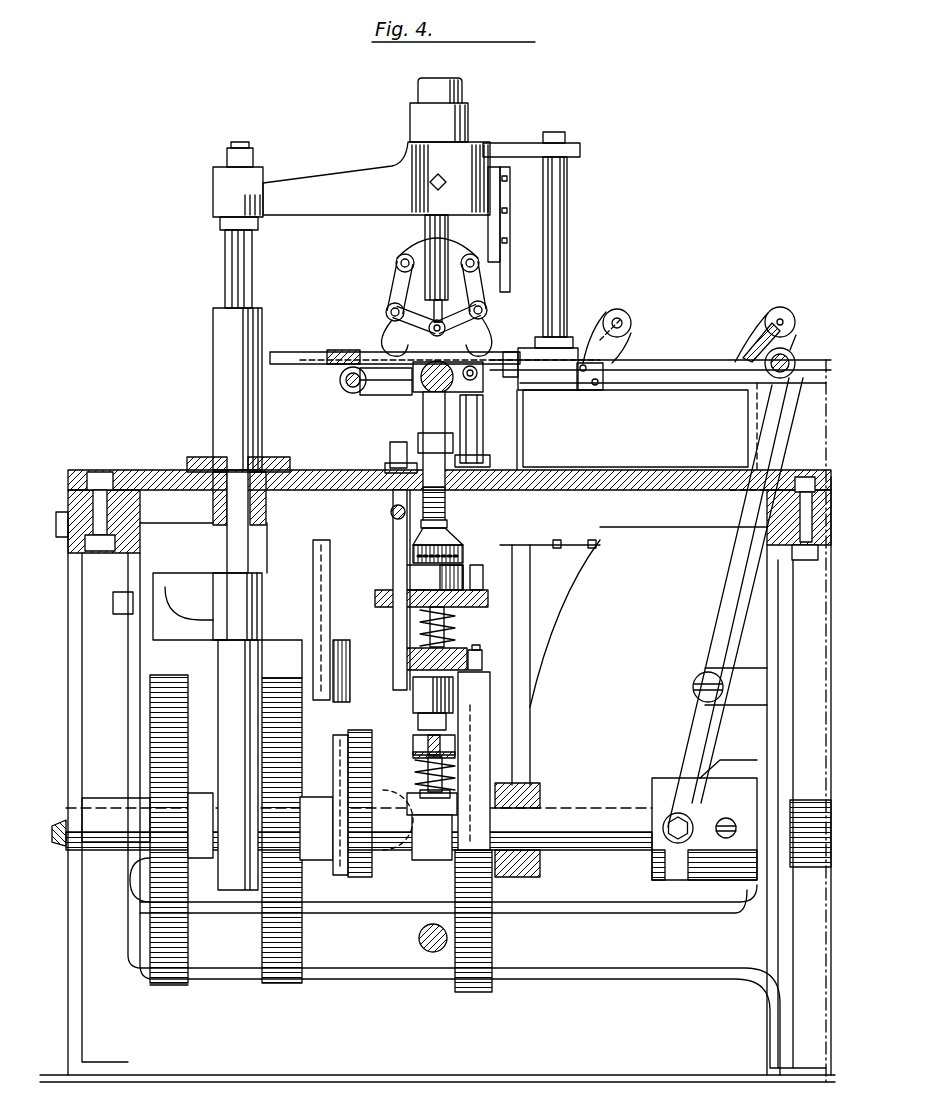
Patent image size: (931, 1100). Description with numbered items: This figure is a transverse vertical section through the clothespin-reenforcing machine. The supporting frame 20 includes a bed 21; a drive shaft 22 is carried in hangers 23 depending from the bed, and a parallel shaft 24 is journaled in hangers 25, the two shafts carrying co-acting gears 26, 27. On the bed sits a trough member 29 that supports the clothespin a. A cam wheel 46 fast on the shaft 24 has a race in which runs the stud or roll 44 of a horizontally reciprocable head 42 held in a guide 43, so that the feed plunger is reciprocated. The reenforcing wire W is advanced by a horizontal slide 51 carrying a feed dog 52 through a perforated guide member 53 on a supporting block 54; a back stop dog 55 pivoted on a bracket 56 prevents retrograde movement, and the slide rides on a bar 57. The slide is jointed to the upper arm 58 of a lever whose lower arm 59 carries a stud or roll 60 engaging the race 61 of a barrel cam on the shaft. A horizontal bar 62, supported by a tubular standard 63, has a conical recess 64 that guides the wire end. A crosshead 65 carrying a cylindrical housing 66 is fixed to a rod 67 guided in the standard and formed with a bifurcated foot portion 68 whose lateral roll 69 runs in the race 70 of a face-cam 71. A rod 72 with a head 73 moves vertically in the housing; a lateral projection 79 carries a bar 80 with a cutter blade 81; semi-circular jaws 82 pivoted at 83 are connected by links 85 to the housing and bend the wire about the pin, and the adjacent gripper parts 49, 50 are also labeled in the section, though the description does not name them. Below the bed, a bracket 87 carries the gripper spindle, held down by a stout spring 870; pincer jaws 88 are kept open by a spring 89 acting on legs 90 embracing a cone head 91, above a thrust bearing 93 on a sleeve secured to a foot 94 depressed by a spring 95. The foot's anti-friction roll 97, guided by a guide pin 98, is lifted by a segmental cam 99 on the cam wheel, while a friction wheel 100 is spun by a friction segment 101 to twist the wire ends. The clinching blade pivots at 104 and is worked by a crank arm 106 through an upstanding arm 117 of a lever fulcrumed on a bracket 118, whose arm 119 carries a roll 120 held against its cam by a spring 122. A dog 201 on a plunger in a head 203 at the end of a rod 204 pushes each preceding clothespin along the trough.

The supporting frame 20 is at (722, 970).
The bed 21 is at (170, 468).
The drive shaft 22 is at (60, 848).
The hangers 23 is at (310, 590).
The shaft 24 is at (597, 842).
The hangers 25 is at (146, 556).
The gear 26 is at (140, 885).
The gear 27 is at (148, 955).
The trough member 29 is at (386, 458).
The horizontally reciprocable head 42 is at (540, 867).
The guide 43 is at (530, 878).
The stud or roll 44 is at (505, 820).
The cam wheel 46 is at (492, 687).
The gripper arm 49 is at (403, 330).
The gripper arm 50 is at (440, 352).
The horizontal slide 51 is at (735, 360).
The feed dog 52 is at (760, 318).
The guide member 53 is at (510, 352).
The supporting block 54 is at (635, 428).
The back stop dog 55 is at (586, 345).
The bracket 56 is at (632, 333).
The bar 57 is at (712, 383).
The upper arm 58 is at (723, 565).
The lower arm 59 is at (703, 732).
The stud or roll 60 is at (665, 845).
The cam race 61 is at (690, 880).
The bar 62 is at (276, 351).
The tubular standard 63 is at (213, 350).
The conical recess 64 is at (363, 352).
The crosshead 65 is at (402, 158).
The cylindrical housing 66 is at (462, 112).
The rod 67 is at (225, 243).
The bifurcated foot portion 68 is at (232, 892).
The lateral roll 69 is at (274, 688).
The cam race 70 is at (250, 715).
The face-cam 71 is at (280, 980).
The rod 72 is at (426, 292).
The head 73 is at (420, 90).
The lateral projection 79 is at (478, 178).
The bar 80 is at (512, 187).
The cutter blade 81 is at (512, 223).
The jaws 82 is at (392, 333).
The pivot 83 is at (425, 238).
The links 85 is at (398, 268).
The bracket 87 is at (490, 598).
The jaws 88 is at (425, 420).
The spring 89 is at (446, 498).
The legs 90 is at (448, 523).
The cone head 91 is at (485, 535).
The thrust bearing 93 is at (464, 556).
The foot 94 is at (458, 636).
The spring 95 is at (428, 620).
The anti-friction roll 97 is at (484, 660).
The guide pin 98 is at (484, 570).
The segmental cam 99 is at (480, 993).
The friction wheel 100 is at (415, 692).
The friction segment 101 is at (452, 882).
The pivot pin 104 is at (483, 405).
The crank arm 106 is at (483, 420).
The upstanding arm 117 is at (393, 562).
The bracket 118 is at (348, 630).
The arm 119 is at (400, 810).
The roll 120 is at (352, 856).
The spring 122 is at (392, 519).
The dog 201 is at (415, 393).
The head 203 is at (383, 395).
The rod 204 is at (340, 390).
The spring 870 is at (457, 760).
The wire W is at (681, 362).
The clothespin a is at (474, 380).